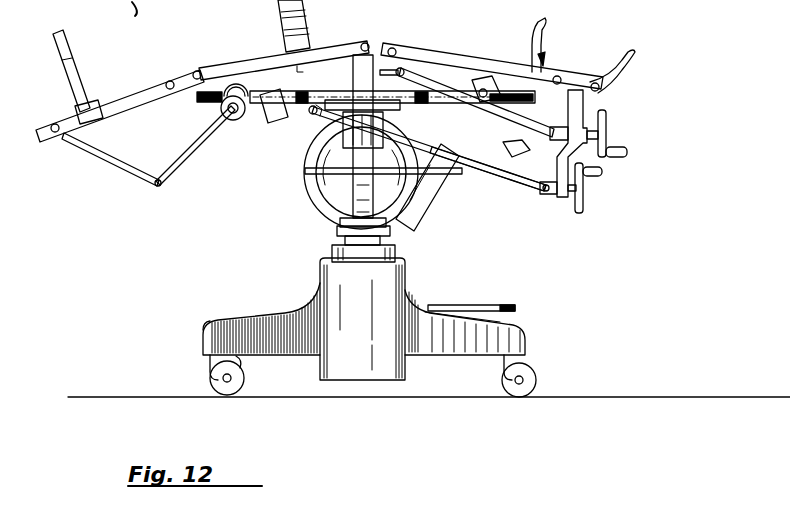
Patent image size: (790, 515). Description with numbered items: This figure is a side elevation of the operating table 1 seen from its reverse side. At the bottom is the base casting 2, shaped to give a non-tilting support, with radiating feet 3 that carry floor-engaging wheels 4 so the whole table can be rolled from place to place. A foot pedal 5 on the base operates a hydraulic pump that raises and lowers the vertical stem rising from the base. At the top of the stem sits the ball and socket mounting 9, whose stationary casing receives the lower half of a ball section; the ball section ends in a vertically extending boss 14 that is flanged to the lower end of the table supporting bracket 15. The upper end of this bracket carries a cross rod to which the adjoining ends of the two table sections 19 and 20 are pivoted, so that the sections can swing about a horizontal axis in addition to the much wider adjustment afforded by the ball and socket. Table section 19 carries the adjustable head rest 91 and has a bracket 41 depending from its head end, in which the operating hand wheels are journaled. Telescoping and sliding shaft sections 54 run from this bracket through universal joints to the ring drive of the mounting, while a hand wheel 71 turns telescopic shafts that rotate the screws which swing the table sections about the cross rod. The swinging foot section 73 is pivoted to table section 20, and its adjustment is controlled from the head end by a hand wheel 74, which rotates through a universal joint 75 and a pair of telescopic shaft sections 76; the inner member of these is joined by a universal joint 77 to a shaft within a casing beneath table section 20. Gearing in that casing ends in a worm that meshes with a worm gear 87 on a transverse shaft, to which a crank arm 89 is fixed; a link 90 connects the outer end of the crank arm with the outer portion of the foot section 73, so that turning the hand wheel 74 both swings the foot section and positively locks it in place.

The operating table 1 is at (278, 309).
The base casting 2 is at (235, 316).
The radiating feet 3 is at (205, 330).
The floor-engaging wheels 4 is at (540, 378).
The foot pedal 5 is at (503, 306).
The ball and socket mounting 9 is at (316, 198).
The boss 14 is at (213, 100).
The table supporting bracket 15 is at (357, 72).
The table section 19 is at (458, 58).
The table section 20 is at (230, 67).
The bracket 41 is at (587, 104).
The telescoping and sliding shaft sections 54 is at (505, 148).
The hand wheel 71 is at (607, 117).
The swinging foot section 73 is at (118, 100).
The hand wheel 74 is at (588, 200).
The universal joint 75 is at (543, 190).
The telescopic shaft sections 76 is at (502, 182).
The universal joint 77 is at (318, 115).
The worm gear 87 is at (235, 122).
The crank arm 89 is at (178, 168).
The link 90 is at (107, 163).
The adjustable head rest 91 is at (622, 57).